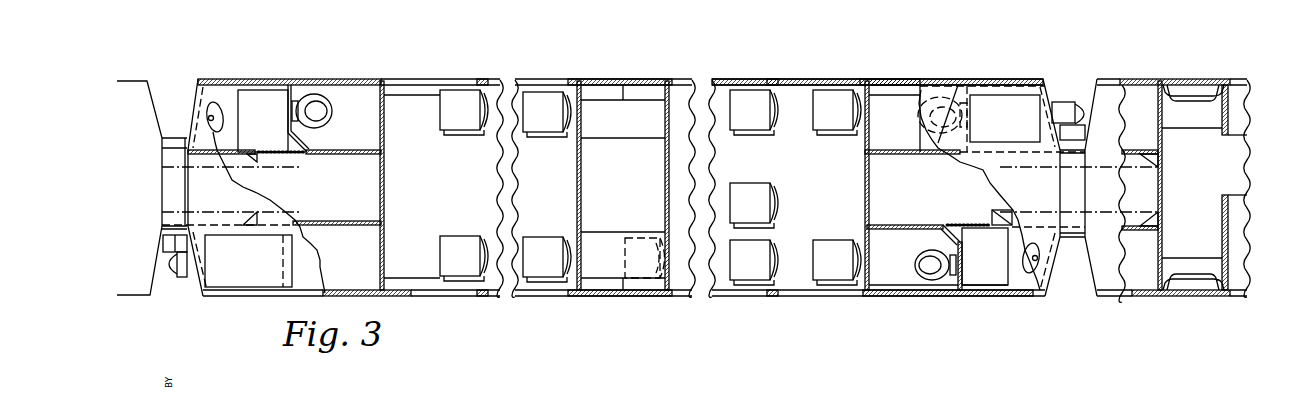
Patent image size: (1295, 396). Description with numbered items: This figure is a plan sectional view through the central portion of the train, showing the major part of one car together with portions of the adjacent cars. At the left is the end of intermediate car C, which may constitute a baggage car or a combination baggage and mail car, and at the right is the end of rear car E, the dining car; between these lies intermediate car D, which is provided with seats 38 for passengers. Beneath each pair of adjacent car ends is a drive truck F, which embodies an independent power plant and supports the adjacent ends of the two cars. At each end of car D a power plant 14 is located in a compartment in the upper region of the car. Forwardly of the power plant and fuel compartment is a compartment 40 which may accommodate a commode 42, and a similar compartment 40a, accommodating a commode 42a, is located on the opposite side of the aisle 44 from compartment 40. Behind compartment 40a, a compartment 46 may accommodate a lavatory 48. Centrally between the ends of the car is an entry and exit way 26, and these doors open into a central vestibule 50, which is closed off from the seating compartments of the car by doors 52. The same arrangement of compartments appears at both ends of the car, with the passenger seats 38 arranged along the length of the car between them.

The power plant 14 is at (252, 282).
The entry and exit way 26 is at (643, 297).
The seats 38 is at (755, 97).
The compartment 40 is at (358, 277).
The compartment 40a is at (357, 97).
The commode 42 is at (953, 87).
The commode 42a is at (315, 97).
The aisle 44 is at (962, 190).
The compartment 46 is at (267, 98).
The lavatory 48 is at (223, 92).
The central vestibule 50 is at (650, 203).
The doors 52 is at (384, 215).
The intermediate car C is at (147, 80).
The intermediate car D is at (387, 80).
The rear car E is at (1182, 80).
The drive truck F is at (184, 274).